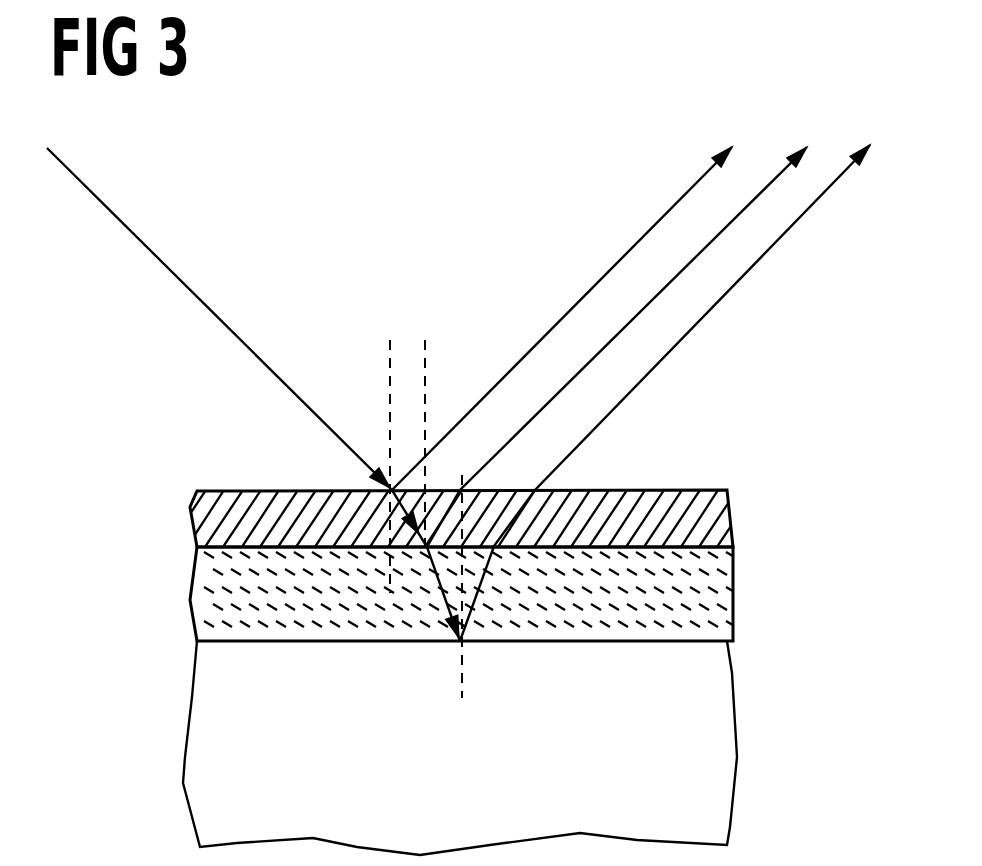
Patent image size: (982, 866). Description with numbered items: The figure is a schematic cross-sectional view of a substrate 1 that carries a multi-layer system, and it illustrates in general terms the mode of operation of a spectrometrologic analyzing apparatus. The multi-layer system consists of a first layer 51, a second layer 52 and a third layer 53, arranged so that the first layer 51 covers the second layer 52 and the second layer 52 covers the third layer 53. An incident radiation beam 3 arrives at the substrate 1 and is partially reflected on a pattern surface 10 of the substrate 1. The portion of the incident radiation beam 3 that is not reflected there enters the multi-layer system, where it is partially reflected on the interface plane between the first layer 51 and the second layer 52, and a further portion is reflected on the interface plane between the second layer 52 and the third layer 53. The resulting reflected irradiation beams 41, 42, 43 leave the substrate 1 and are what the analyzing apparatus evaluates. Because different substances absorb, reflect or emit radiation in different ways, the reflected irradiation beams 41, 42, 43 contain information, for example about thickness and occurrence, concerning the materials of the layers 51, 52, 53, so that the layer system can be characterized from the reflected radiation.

The substrate 1 is at (130, 728).
The incident radiation beam 3 is at (167, 267).
The pattern surface 10 is at (245, 490).
The reflected irradiation beam 41 is at (652, 225).
The reflected irradiation beam 42 is at (768, 180).
The reflected irradiation beam 43 is at (750, 268).
The first layer 51 is at (720, 522).
The second layer 52 is at (723, 605).
The third layer 53 is at (720, 760).